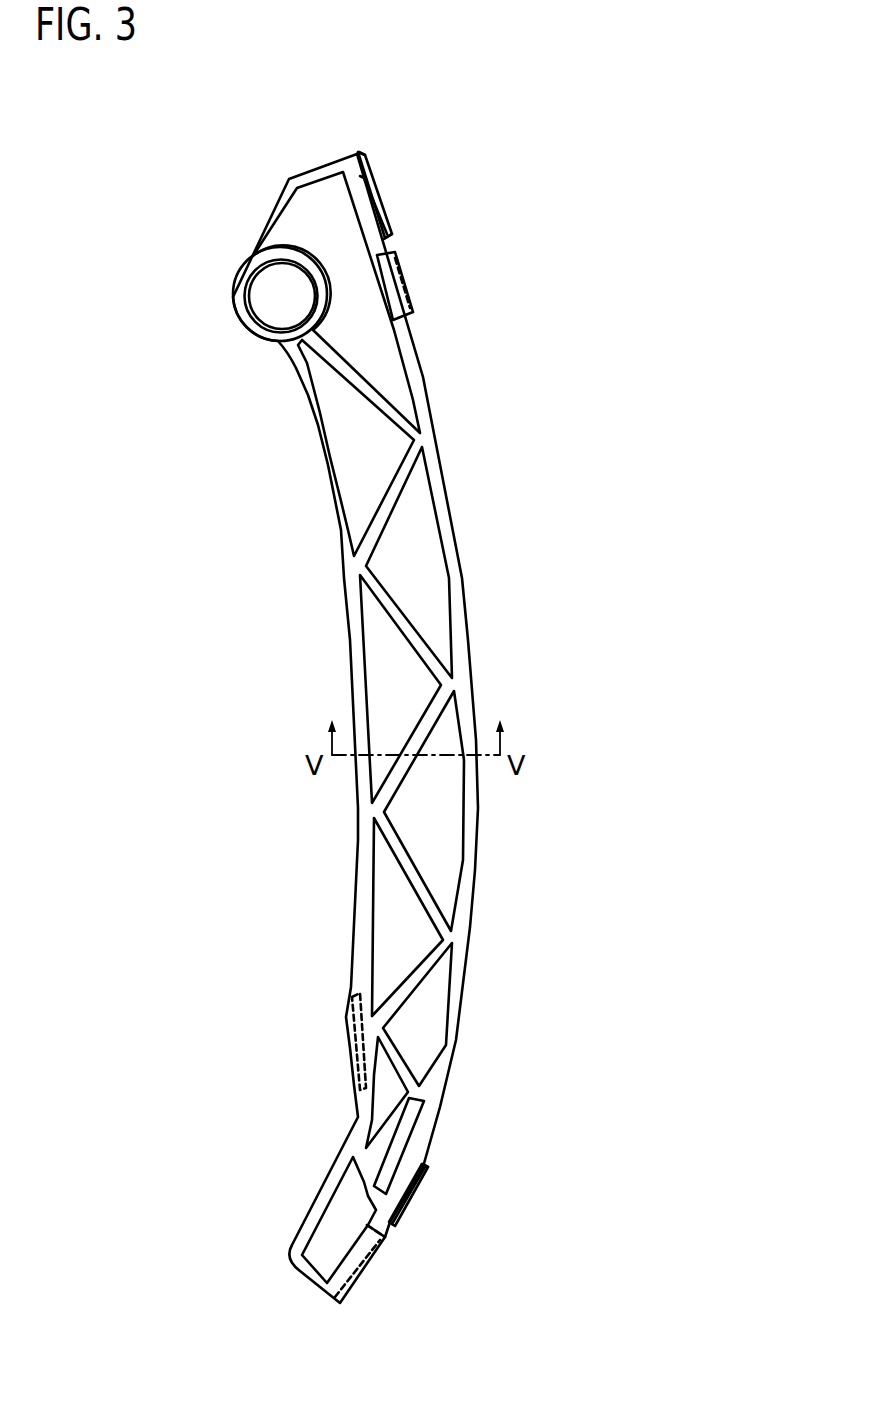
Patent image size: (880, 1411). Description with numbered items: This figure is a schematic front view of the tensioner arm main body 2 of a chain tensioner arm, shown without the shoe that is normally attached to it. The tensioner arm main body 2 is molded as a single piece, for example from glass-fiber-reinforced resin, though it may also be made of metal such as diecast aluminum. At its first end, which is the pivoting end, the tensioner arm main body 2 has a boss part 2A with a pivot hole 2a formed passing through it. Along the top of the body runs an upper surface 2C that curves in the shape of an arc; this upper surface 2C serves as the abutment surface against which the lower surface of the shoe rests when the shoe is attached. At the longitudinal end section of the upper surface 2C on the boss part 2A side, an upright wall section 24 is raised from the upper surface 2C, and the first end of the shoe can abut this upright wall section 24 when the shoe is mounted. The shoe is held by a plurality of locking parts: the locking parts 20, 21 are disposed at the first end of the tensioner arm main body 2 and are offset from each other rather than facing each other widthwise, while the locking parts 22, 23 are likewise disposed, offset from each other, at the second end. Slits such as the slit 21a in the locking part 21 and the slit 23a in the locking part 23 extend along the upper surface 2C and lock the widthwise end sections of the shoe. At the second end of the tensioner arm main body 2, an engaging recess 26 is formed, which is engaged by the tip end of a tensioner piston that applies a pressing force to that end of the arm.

The tensioner arm main body 2 is at (480, 444).
The boss part 2A is at (288, 352).
The pivot hole 2a is at (251, 298).
The upper surface 2C is at (468, 566).
The locking part 20 is at (413, 298).
The locking part 21 is at (380, 197).
The slit 21a is at (387, 238).
The locking part 22 is at (357, 1270).
The locking part 23 is at (420, 1187).
The slit 23a is at (421, 1162).
The upright wall section 24 is at (366, 157).
The engaging recess 26 is at (352, 1040).